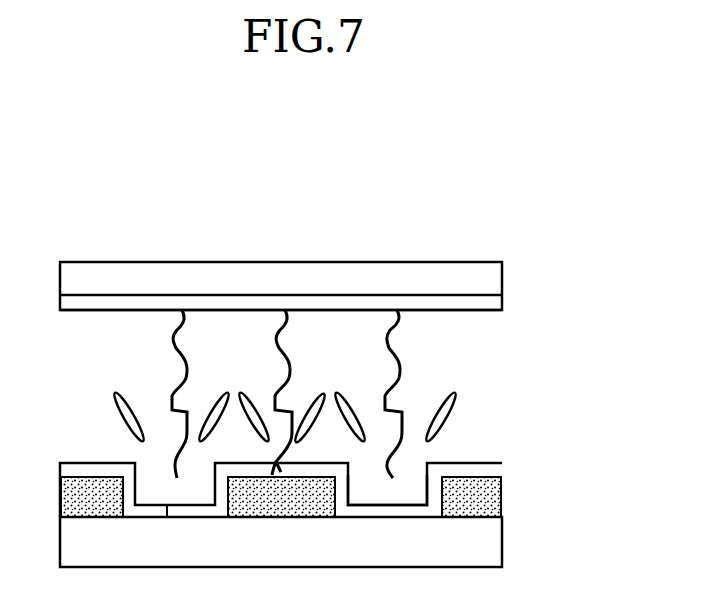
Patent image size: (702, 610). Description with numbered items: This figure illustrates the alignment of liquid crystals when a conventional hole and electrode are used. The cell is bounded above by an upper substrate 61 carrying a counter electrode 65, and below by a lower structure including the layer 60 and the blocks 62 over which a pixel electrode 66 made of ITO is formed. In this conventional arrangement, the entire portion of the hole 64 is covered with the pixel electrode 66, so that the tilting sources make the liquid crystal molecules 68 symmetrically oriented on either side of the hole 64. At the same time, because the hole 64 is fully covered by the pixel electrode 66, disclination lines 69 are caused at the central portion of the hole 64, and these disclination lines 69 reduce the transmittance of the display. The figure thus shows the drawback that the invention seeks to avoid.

The lower substrate 60 is at (492, 550).
The upper substrate 61 is at (492, 273).
The pixel electrodes 62 is at (492, 502).
The hole 64 is at (407, 468).
The counter electrode 65 is at (492, 302).
The pixel electrode 66 is at (492, 470).
The liquid crystal molecules 68 is at (453, 410).
The disclination lines 69 is at (402, 355).